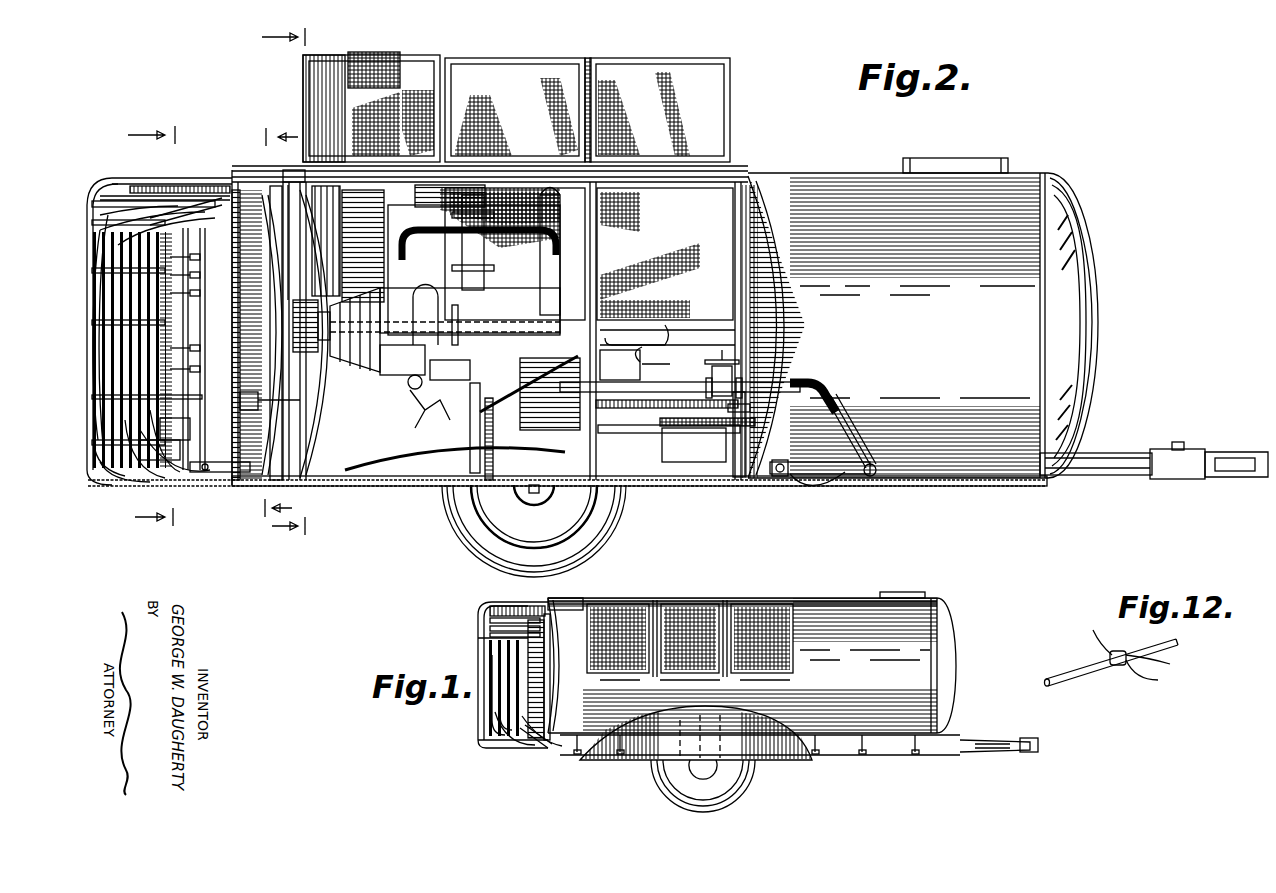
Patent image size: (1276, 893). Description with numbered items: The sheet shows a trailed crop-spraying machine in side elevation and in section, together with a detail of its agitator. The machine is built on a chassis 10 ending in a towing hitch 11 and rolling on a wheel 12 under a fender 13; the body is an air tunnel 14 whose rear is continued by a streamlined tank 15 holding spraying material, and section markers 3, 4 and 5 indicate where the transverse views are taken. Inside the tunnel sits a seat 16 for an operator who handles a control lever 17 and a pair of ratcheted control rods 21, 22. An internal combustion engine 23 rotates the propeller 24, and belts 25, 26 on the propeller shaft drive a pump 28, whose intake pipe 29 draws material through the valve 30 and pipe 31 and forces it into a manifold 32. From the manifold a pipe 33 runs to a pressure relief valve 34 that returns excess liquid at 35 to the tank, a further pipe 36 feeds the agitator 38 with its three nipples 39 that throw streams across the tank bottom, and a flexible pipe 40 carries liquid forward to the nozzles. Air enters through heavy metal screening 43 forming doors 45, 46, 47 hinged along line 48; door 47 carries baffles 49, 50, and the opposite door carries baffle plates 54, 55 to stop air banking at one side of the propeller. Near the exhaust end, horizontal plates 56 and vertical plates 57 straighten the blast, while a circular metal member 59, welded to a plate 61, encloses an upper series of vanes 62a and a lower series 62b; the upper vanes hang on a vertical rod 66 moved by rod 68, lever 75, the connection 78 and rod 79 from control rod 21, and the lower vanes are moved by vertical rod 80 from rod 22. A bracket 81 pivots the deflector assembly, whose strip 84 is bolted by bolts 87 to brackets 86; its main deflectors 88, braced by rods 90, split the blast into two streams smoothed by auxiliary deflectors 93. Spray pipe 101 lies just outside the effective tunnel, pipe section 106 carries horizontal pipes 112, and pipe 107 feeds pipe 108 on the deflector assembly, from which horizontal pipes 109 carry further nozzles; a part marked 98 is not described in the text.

In FIG. 2, the section line 3 is at (292, 282).
In FIG. 2, the section line 4 is at (272, 321).
In FIG. 2, the section line 5 is at (159, 325).
In FIG. 2, the chassis 10 is at (1100, 478).
In FIG. 1, the chassis 10 is at (903, 755).
In FIG. 2, the hitch 11 is at (1180, 442).
In FIG. 1, the hitch 11 is at (1030, 752).
In FIG. 2, the wheel 12 is at (468, 553).
In FIG. 1, the wheel 12 is at (745, 784).
In FIG. 1, the fender 13 is at (790, 748).
In FIG. 2, the air tunnel 14 is at (639, 511).
In FIG. 1, the air tunnel 14 is at (747, 592).
In FIG. 2, the tank 15 is at (923, 318).
In FIG. 1, the tank 15 is at (865, 675).
In FIG. 2, the seat 16 is at (695, 440).
In FIG. 2, the control lever 17 is at (600, 265).
In FIG. 2, the ratcheted control rod 21 is at (644, 338).
In FIG. 2, the ratcheted control rod 22 is at (666, 358).
In FIG. 2, the internal combustion engine 23 is at (450, 273).
In FIG. 2, the propeller 24 is at (350, 370).
In FIG. 2, the belt 25 is at (322, 345).
In FIG. 2, the belt 26 is at (305, 352).
In FIG. 2, the pump 28 is at (440, 300).
In FIG. 2, the intake pipe 29 is at (850, 414).
In FIG. 2, the valve 30 is at (735, 372).
In FIG. 2, the pipe 31 is at (485, 330).
In FIG. 2, the manifold 32 is at (410, 392).
In FIG. 2, the pipe 33 is at (645, 440).
In FIG. 2, the pressure relief valve 34 is at (738, 478).
In FIG. 2, the return line 35 is at (820, 384).
In FIG. 2, the pipe 36 is at (662, 470).
In FIG. 2, the agitator 38 is at (780, 477).
In FIG. 12, the agitator 38 is at (1098, 675).
In FIG. 2, the nipple 39 is at (815, 488).
In FIG. 12, the nipple 39 is at (1143, 655).
In FIG. 2, the flexible pipe 40 is at (400, 470).
In FIG. 2, the metal screening 43 is at (578, 80).
In FIG. 1, the metal screening 43 is at (770, 640).
In FIG. 2, the door 45 is at (706, 62).
In FIG. 1, the door 45 is at (765, 608).
In FIG. 2, the door 46 is at (535, 62).
In FIG. 1, the door 46 is at (695, 606).
In FIG. 2, the door 47 is at (445, 62).
In FIG. 1, the door 47 is at (640, 612).
In FIG. 2, the hinge line 48 is at (720, 170).
In FIG. 1, the hinge line 48 is at (610, 612).
In FIG. 2, the baffle 49 is at (380, 55).
In FIG. 1, the baffle 49 is at (620, 650).
In FIG. 2, the baffle 50 is at (345, 80).
In FIG. 1, the baffle 50 is at (625, 660).
In FIG. 2, the baffle plate 54 is at (322, 190).
In FIG. 2, the baffle plate 55 is at (362, 258).
In FIG. 2, the horizontal metal plate 56 is at (268, 245).
In FIG. 2, the vertical plate 57 is at (287, 185).
In FIG. 2, the circular metal member 59 is at (260, 402).
In FIG. 2, the circular metal plate 61 is at (238, 320).
In FIG. 2, the upper series of horizontal vanes 62a is at (196, 257).
In FIG. 2, the lower series of horizontal vanes 62b is at (195, 371).
In FIG. 2, the vertical rod 66 is at (190, 294).
In FIG. 2, the rod 68 is at (190, 276).
In FIG. 2, the lever 75 is at (210, 474).
In FIG. 2, the connection 78 is at (483, 478).
In FIG. 2, the rod 79 is at (482, 398).
In FIG. 2, the vertical rod 80 is at (191, 349).
In FIG. 2, the bracket 81 is at (165, 470).
In FIG. 1, the bracket 81 is at (530, 742).
In FIG. 2, the strip 84 is at (122, 222).
In FIG. 1, the strip 84 is at (490, 635).
In FIG. 2, the bracket 86 is at (272, 186).
In FIG. 1, the bracket 86 is at (545, 650).
In FIG. 2, the bolt 87 is at (205, 195).
In FIG. 2, the main deflector 88 is at (110, 476).
In FIG. 1, the main deflector 88 is at (505, 740).
In FIG. 2, the brace rod 90 is at (104, 463).
In FIG. 2, the auxiliary deflector 93 is at (135, 472).
In FIG. 2, the header tube 98 is at (160, 196).
In FIG. 1, the header tube 98 is at (490, 612).
In FIG. 2, the pipe 101 is at (274, 305).
In FIG. 1, the pipe 101 is at (546, 660).
In FIG. 2, the pipe section 106 is at (285, 172).
In FIG. 1, the pipe section 106 is at (558, 612).
In FIG. 2, the pipe 107 is at (165, 478).
In FIG. 1, the pipe 107 is at (540, 745).
In FIG. 1, the pipe 108 is at (478, 720).
In FIG. 2, the horizontal pipe 109 is at (104, 215).
In FIG. 1, the horizontal pipe 109 is at (492, 660).
In FIG. 2, the horizontal pipe 112 is at (195, 186).